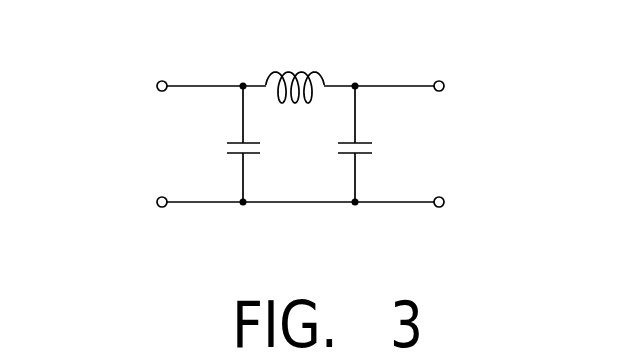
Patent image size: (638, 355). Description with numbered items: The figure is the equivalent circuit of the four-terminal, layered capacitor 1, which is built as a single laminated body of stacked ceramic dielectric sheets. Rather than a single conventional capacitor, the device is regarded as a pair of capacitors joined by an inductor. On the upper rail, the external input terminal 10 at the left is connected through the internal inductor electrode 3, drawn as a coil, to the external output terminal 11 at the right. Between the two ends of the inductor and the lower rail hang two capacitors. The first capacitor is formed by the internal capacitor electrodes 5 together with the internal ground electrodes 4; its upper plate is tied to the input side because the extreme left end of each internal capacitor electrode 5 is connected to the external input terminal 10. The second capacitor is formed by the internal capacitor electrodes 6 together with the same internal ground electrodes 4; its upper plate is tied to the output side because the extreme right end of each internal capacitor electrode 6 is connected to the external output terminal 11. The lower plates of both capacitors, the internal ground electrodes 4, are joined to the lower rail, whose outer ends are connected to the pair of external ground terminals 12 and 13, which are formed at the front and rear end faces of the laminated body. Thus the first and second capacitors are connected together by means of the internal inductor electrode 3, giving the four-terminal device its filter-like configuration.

The four-terminal, layered capacitor 1 is at (83, 142).
The internal inductor electrode 3 is at (287, 73).
The internal ground electrode 4 is at (252, 156).
The internal capacitor electrode 5 is at (233, 137).
The internal capacitor electrode 6 is at (362, 137).
The external input terminal 10 is at (166, 82).
The external output terminal 11 is at (444, 84).
The external ground terminal 12 is at (164, 206).
The external ground terminal 13 is at (444, 204).